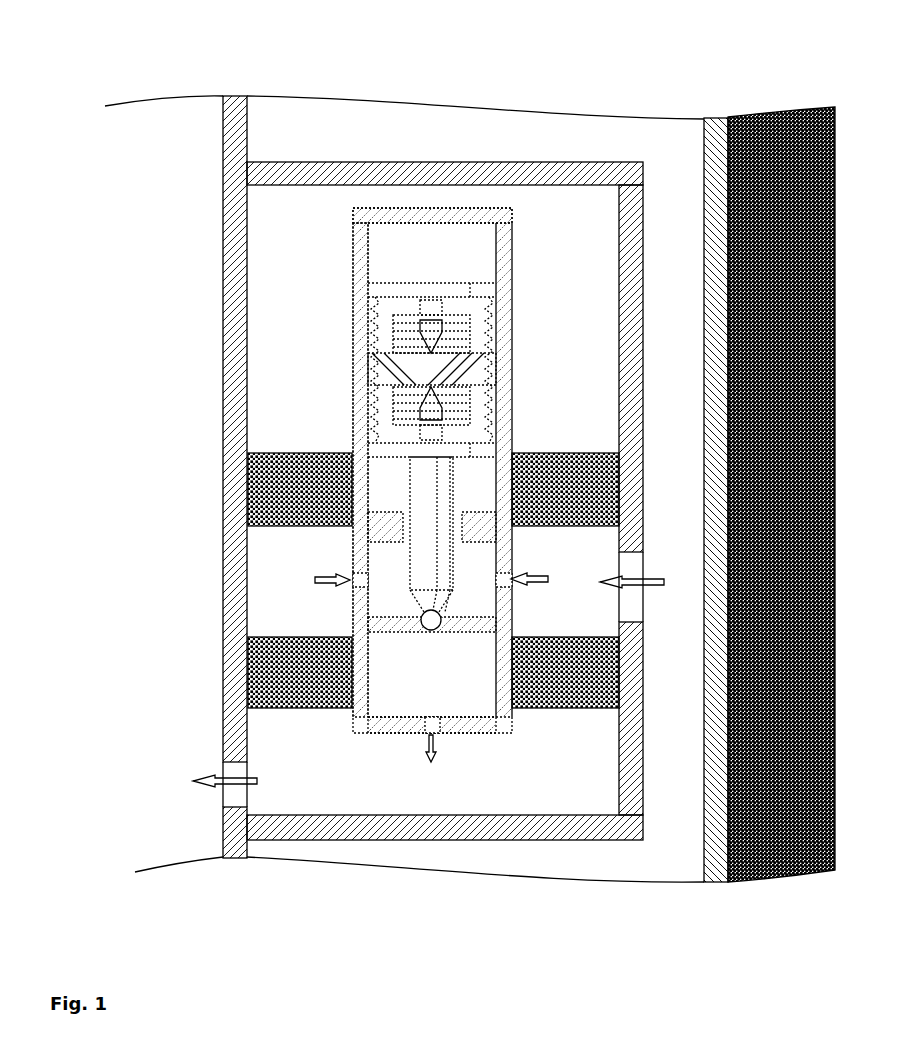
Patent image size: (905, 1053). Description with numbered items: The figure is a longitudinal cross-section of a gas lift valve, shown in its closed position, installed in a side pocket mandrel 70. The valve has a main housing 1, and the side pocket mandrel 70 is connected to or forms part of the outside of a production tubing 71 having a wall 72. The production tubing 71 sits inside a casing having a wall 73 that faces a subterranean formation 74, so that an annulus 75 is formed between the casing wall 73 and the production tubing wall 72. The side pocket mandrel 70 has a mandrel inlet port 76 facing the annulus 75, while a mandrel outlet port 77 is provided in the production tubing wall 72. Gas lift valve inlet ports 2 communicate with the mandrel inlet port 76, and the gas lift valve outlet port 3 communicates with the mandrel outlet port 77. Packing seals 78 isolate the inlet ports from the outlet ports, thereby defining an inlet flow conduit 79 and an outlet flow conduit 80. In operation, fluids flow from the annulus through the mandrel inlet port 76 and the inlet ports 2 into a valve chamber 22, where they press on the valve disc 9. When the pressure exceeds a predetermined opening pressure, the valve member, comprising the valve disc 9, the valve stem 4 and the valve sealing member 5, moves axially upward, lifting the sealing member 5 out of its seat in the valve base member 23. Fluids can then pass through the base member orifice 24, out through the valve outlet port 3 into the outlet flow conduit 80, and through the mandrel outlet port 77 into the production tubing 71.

The main housing 1 is at (458, 411).
The gas lift valve inlet ports 2 is at (407, 571).
The gas lift valve outlet port 3 is at (523, 739).
The valve stem 4 is at (299, 608).
The valve sealing member 5 is at (368, 693).
The valve disc 9 is at (306, 523).
The valve chamber 22 is at (474, 556).
The valve base member 23 is at (513, 703).
The base member orifice 24 is at (489, 711).
The side pocket mandrel 70 is at (445, 426).
The production tubing 71 is at (147, 290).
The production tubing wall 72 is at (278, 446).
The casing wall 73 is at (749, 446).
The subterranean formation 74 is at (784, 470).
The annulus 75 is at (664, 285).
The mandrel inlet port 76 is at (648, 619).
The mandrel outlet port 77 is at (186, 809).
The packing seals 78 is at (411, 579).
The inlet flow conduit 79 is at (418, 595).
The outlet flow conduit 80 is at (362, 779).